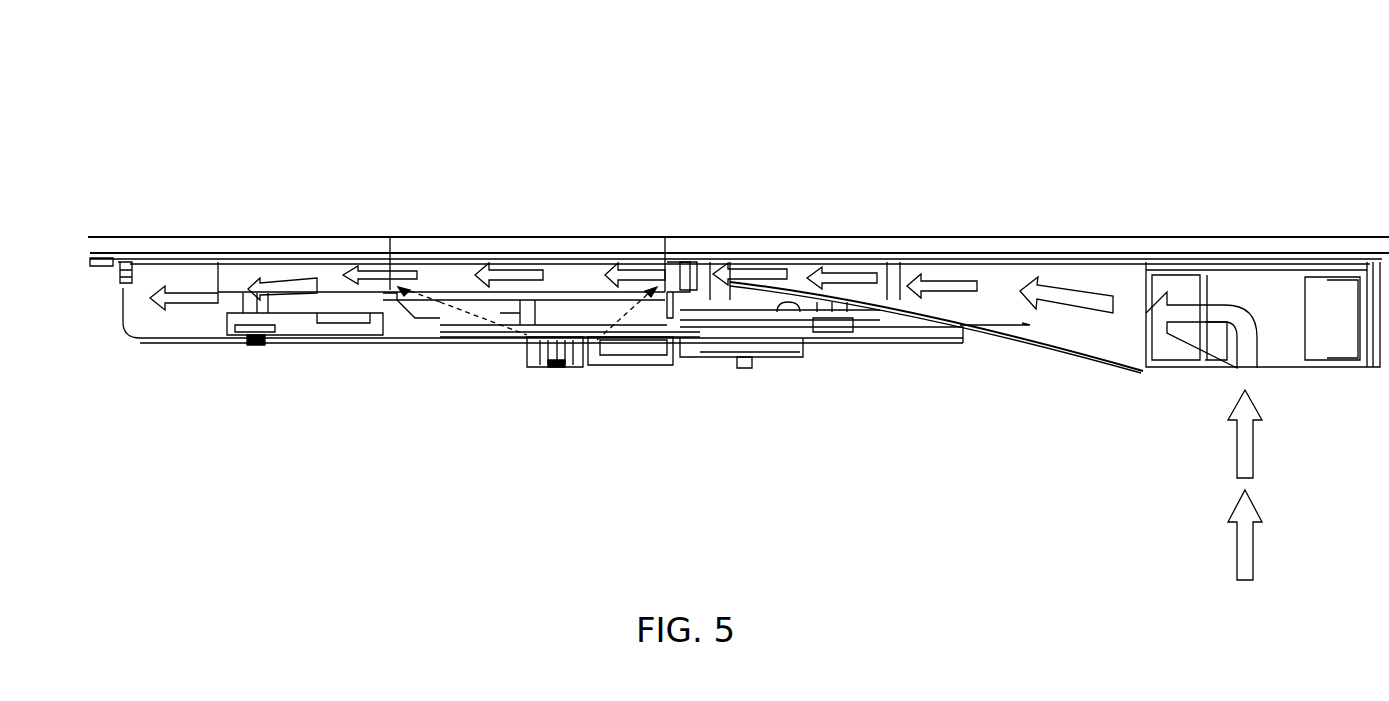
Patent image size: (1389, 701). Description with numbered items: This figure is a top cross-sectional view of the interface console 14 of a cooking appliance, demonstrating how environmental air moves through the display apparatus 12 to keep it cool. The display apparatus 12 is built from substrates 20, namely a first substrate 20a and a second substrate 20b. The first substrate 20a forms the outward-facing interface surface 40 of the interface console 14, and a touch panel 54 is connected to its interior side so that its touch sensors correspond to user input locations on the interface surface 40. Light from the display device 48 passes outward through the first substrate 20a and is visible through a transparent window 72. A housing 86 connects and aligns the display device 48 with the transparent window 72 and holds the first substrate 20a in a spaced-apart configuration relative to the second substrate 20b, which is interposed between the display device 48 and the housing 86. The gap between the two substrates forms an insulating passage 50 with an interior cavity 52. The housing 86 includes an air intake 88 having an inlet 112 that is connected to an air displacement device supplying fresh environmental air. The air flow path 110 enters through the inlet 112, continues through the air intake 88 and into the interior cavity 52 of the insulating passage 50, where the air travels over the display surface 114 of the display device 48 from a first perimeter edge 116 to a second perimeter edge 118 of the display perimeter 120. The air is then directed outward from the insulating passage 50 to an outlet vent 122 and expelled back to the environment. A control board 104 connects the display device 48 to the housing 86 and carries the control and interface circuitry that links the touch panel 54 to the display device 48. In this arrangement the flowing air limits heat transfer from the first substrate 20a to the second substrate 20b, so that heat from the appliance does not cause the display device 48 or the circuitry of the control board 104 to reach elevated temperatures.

The display apparatus 12 is at (802, 153).
The interface console 14 is at (153, 78).
The substrate 20 is at (351, 245).
The first substrate 20a is at (177, 243).
The second substrate 20b is at (547, 270).
The interface surface 40 is at (1133, 240).
The display device 48 is at (736, 241).
The insulating passage 50 is at (524, 242).
The interior cavity 52 is at (467, 270).
The touch panel 54 is at (97, 265).
The transparent window 72 is at (498, 240).
The housing 86 is at (285, 270).
The air intake 88 is at (1025, 323).
The control board 104 is at (820, 337).
The air flow path 110 is at (646, 395).
The inlet 112 is at (1132, 372).
The display surface 114 is at (572, 285).
The first perimeter edge 116 is at (672, 245).
The second perimeter edge 118 is at (390, 253).
The display perimeter 120 is at (600, 400).
The outlet vent 122 is at (188, 317).